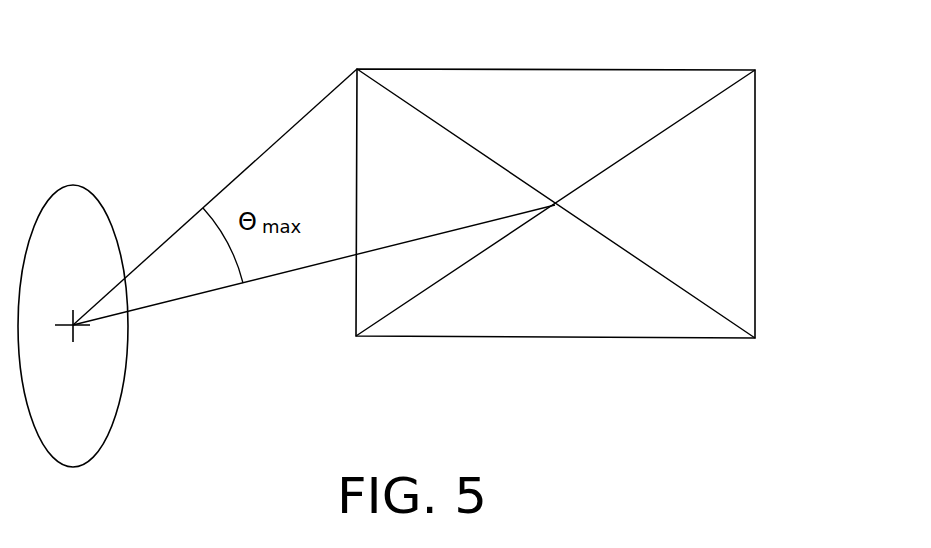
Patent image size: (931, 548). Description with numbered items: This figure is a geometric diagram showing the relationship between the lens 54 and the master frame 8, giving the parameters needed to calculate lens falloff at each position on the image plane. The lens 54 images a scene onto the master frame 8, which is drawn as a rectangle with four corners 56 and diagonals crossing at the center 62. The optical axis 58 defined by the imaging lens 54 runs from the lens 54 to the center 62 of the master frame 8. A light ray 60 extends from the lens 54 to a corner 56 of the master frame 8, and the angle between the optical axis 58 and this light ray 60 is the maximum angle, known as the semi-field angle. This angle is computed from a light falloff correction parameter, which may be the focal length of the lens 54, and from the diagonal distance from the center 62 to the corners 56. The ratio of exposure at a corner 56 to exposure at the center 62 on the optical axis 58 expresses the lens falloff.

The master frame 8 is at (542, 70).
The lens 54 is at (118, 398).
The corner 56 is at (357, 68).
The optical axis 58 is at (190, 297).
The light ray 60 is at (265, 150).
The center of the master frame 62 is at (558, 205).